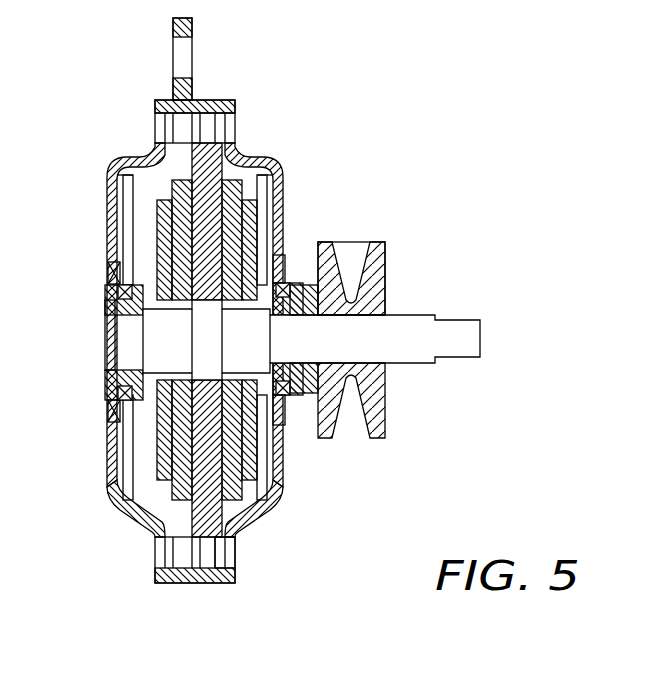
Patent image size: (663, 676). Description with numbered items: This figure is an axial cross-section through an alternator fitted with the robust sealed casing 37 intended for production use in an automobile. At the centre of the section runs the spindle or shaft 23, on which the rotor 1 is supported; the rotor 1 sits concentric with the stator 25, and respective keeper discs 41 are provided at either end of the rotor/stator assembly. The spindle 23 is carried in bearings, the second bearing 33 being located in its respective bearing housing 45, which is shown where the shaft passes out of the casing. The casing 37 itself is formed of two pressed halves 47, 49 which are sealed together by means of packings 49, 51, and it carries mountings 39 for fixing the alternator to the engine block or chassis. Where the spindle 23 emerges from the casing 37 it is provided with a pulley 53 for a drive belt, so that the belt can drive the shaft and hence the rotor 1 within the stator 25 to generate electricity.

The rotor 1 is at (124, 184).
The spindle 23 is at (160, 346).
The stator 25 is at (165, 430).
The second bearing 33 is at (302, 285).
The casing 37 is at (146, 160).
The mounting 39 is at (173, 31).
The keeper disc 41 is at (158, 216).
The bearing housing 45 is at (110, 300).
The pressed half 47 is at (112, 492).
The pressed half 49 is at (200, 549).
The packing 51 is at (222, 549).
The pulley 53 is at (385, 292).